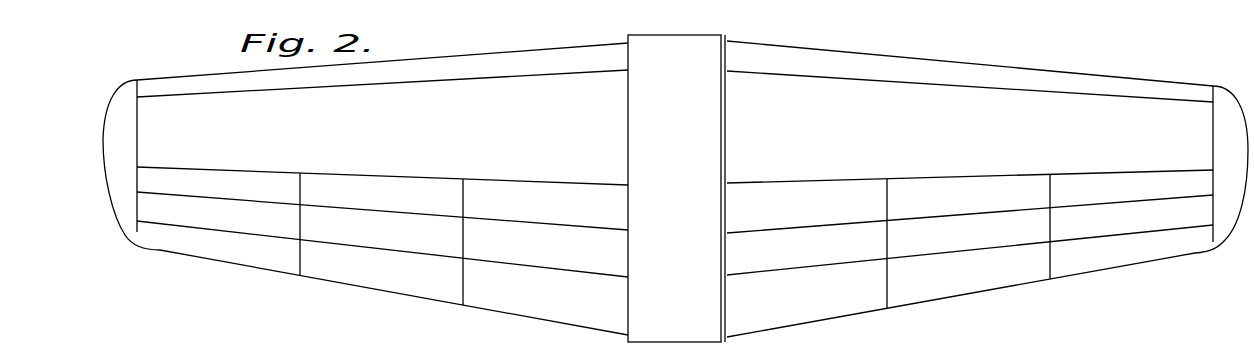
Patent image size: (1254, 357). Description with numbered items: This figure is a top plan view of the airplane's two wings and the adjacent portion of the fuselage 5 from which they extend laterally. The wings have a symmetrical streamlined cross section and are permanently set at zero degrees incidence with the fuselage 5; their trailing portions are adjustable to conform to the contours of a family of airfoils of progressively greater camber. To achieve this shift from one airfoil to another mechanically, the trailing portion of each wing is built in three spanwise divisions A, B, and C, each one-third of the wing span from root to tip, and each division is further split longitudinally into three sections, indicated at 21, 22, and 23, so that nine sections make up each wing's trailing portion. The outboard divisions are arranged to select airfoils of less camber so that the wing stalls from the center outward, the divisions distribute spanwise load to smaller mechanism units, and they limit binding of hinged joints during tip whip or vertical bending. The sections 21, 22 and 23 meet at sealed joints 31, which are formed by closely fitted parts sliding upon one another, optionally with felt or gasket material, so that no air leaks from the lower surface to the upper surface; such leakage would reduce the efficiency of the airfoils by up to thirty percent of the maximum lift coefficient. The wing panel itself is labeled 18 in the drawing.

The wing 18 is at (675, 189).
The fuselage 5 is at (676, 188).
The section 21 is at (820, 273).
The section 22 is at (675, 245).
The section 23 is at (675, 200).
The sealed joint 31 is at (462, 233).
The division A is at (188, 152).
The division B is at (369, 173).
The division C is at (537, 180).